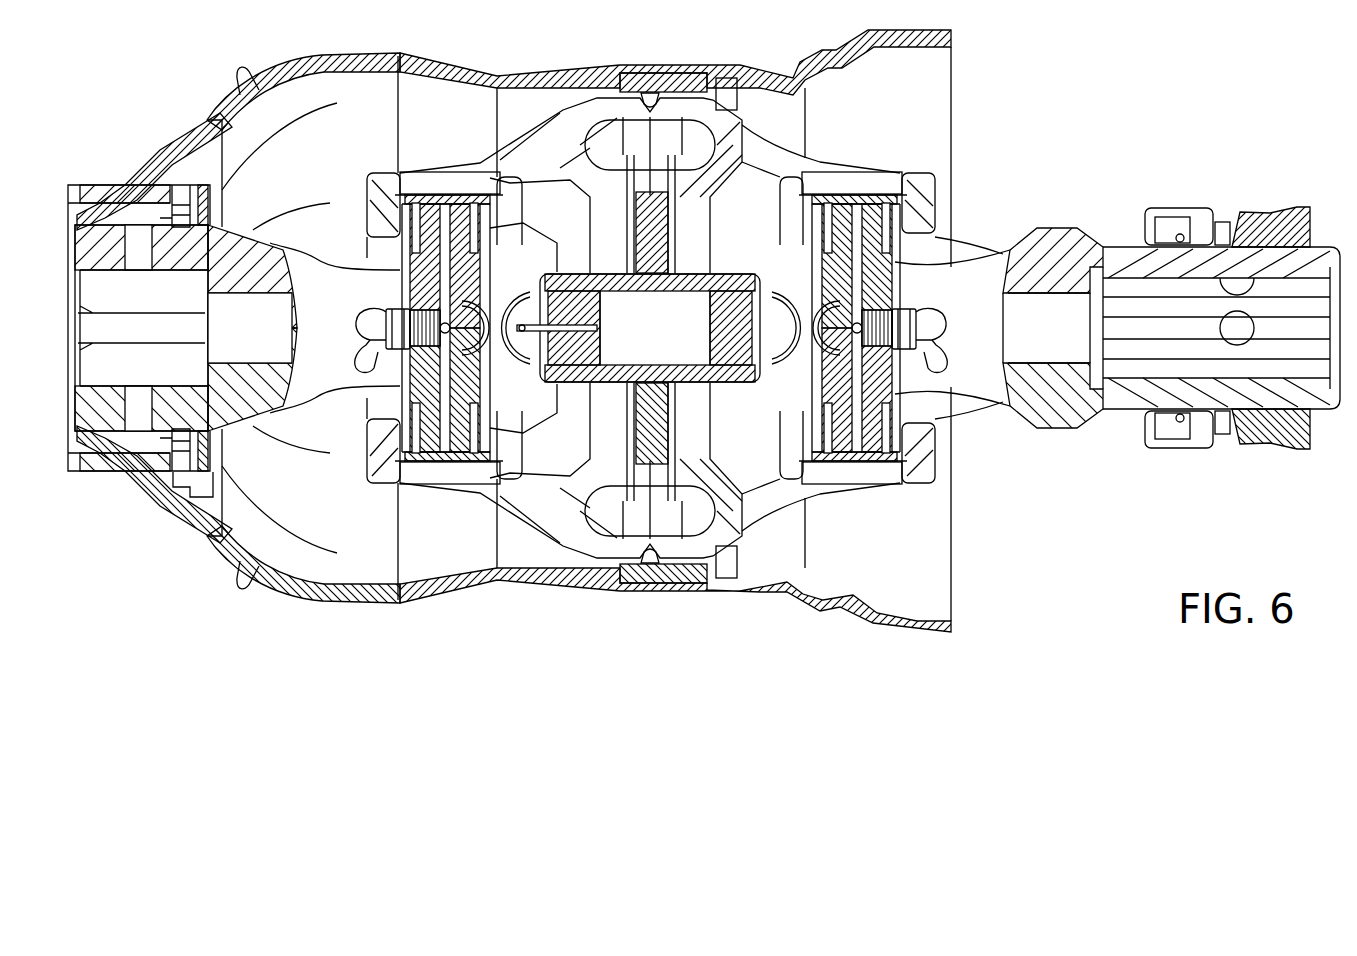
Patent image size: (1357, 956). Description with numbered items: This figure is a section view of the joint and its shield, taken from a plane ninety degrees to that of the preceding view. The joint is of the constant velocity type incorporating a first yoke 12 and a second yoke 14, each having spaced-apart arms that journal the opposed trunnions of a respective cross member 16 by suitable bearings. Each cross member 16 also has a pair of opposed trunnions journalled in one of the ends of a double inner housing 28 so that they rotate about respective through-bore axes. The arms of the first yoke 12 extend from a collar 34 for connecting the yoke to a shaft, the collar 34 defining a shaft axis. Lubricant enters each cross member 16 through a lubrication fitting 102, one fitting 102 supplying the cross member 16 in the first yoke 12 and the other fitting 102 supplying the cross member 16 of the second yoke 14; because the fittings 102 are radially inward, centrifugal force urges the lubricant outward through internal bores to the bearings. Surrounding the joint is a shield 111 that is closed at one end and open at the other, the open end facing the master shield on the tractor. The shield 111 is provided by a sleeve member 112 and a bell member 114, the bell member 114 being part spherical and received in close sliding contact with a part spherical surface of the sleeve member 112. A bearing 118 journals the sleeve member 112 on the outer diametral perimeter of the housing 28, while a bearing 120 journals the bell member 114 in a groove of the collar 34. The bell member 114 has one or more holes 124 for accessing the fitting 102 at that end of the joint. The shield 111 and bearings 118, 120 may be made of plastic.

The first yoke 12 is at (328, 255).
The second yoke 14 is at (1055, 224).
The cross member 16 is at (490, 270).
The double inner housing 28 is at (556, 104).
The collar 34 is at (68, 437).
The lubrication fitting 102 is at (364, 310).
The shield 111 is at (347, 55).
The sleeve member 112 is at (575, 75).
The bell member 114 is at (229, 110).
The bearing 118 is at (684, 72).
The bearing 120 is at (185, 462).
The hole 124 is at (228, 548).